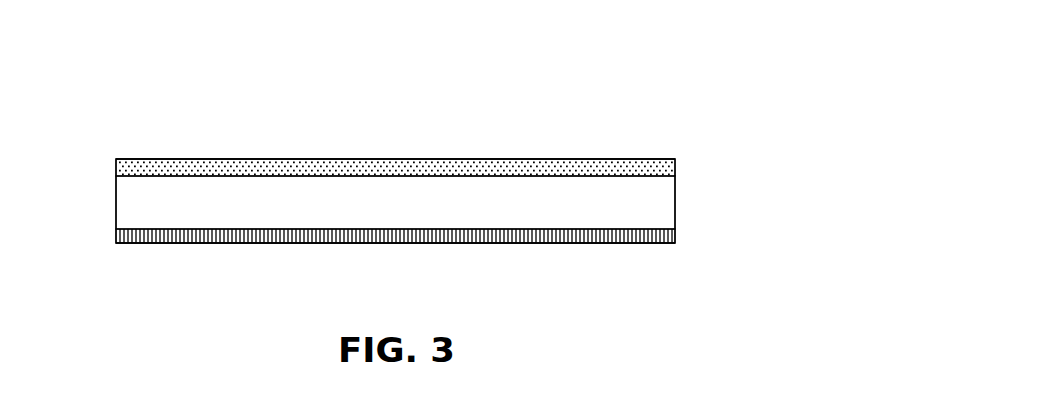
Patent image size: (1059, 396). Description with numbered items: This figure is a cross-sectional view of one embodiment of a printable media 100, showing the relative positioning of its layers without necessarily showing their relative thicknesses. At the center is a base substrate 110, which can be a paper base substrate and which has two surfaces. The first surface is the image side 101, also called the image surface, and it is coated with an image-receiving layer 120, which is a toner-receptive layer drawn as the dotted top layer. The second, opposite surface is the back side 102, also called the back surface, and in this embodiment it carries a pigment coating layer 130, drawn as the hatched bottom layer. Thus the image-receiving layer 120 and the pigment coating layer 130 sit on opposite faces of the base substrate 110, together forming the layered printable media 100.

The printable media 100 is at (549, 97).
The image side 101 is at (218, 114).
The back side 102 is at (222, 275).
The base substrate 110 is at (116, 209).
The image-receiving layer 120 is at (675, 172).
The pigment coating layer 130 is at (675, 237).